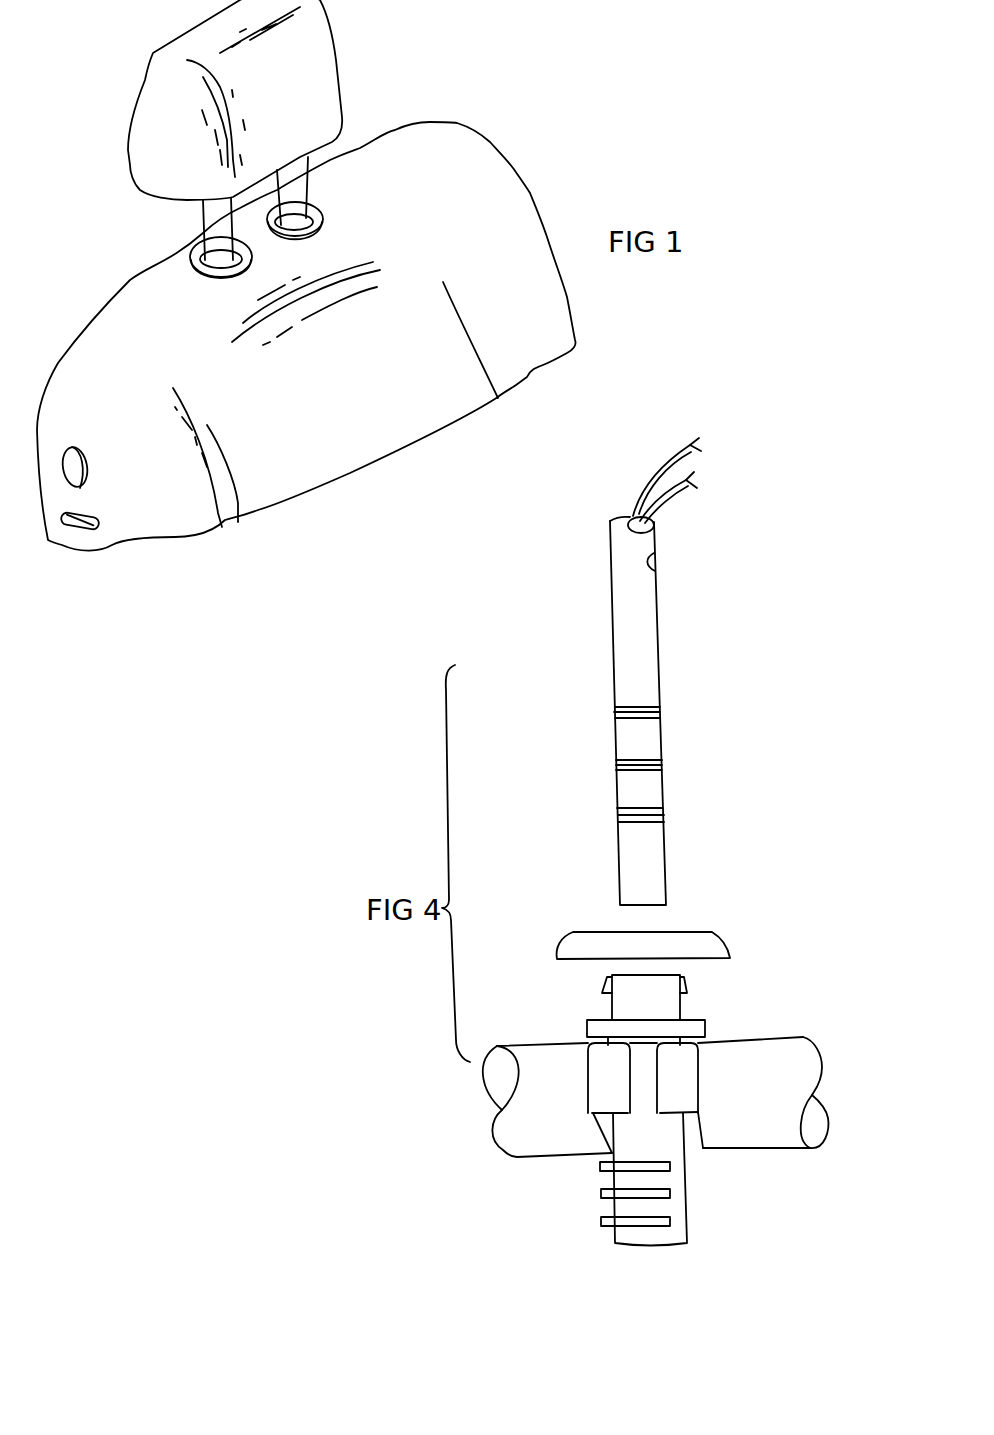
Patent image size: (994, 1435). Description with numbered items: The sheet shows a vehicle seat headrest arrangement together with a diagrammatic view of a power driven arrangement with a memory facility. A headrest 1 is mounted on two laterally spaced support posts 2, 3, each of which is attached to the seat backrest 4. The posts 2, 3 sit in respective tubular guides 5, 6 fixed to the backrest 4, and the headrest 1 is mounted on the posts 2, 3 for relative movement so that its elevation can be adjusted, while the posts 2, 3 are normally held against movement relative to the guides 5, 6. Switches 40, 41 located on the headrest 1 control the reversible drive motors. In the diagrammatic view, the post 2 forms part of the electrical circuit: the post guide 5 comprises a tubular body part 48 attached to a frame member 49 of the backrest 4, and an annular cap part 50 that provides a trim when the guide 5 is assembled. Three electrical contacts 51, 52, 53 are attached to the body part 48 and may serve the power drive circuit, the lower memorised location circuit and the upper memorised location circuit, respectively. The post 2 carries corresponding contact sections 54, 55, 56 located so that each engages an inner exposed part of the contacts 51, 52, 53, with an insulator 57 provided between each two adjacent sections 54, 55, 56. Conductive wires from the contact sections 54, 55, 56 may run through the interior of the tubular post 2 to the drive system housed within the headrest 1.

In FIG. 1, the headrest 1 is at (172, 117).
In FIG. 1, the support post 2 is at (207, 215).
In FIG. 4, the support post 2 is at (647, 657).
In FIG. 1, the support post 3 is at (304, 166).
In FIG. 1, the seat backrest 4 is at (92, 395).
In FIG. 1, the tubular guide 5 is at (200, 272).
In FIG. 4, the tubular guide 5 is at (625, 1007).
In FIG. 1, the tubular guide 6 is at (315, 213).
In FIG. 1, the switch 40 is at (83, 481).
In FIG. 1, the switch 41 is at (80, 532).
In FIG. 4, the tubular body part 48 is at (655, 1138).
In FIG. 4, the frame member 49 is at (755, 1058).
In FIG. 4, the annular cap part 50 is at (697, 945).
In FIG. 4, the electrical contact 51 is at (662, 1168).
In FIG. 4, the electrical contact 52 is at (663, 1196).
In FIG. 4, the electrical contact 53 is at (655, 1222).
In FIG. 4, the contact section 54 is at (650, 690).
In FIG. 4, the contact section 55 is at (640, 742).
In FIG. 4, the contact section 56 is at (650, 790).
In FIG. 4, the insulator 57 is at (636, 715).